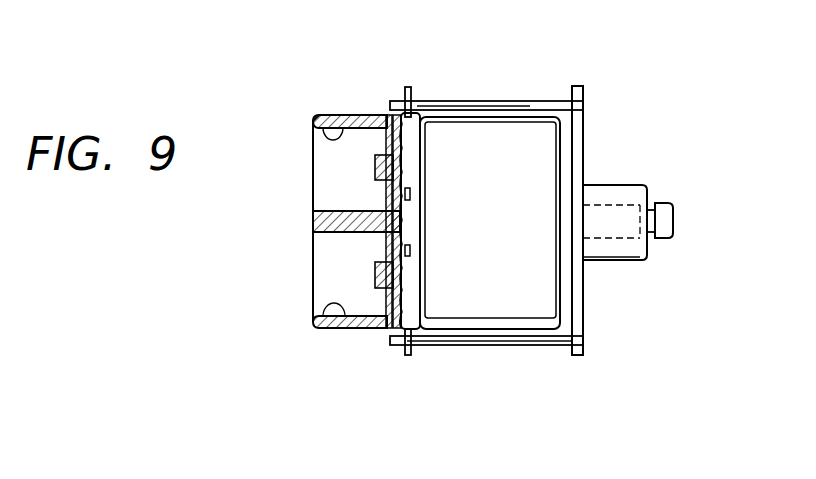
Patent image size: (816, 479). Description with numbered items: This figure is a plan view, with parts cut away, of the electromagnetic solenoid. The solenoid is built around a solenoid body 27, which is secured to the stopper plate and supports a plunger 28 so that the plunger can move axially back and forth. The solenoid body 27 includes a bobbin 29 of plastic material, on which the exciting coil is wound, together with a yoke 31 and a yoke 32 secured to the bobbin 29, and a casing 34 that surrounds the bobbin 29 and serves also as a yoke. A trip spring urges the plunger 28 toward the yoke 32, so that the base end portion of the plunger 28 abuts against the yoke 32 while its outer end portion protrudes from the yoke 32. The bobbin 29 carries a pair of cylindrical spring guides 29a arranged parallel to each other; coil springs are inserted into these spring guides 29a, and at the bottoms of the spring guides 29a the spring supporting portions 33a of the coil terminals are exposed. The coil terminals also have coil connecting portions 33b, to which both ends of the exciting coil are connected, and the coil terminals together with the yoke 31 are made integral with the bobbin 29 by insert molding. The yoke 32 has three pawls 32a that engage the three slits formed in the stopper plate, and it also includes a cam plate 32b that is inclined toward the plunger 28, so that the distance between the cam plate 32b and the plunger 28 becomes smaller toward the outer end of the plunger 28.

The solenoid body 27 is at (523, 140).
The plunger 28 is at (658, 240).
The bobbin 29 is at (417, 115).
The spring guides 29a is at (325, 115).
The yoke 31 is at (402, 87).
The yoke 32 is at (583, 98).
The pawls 32a is at (575, 87).
The cam plate 32b is at (642, 185).
The spring supporting portions 33a is at (383, 200).
The coil connecting portions 33b is at (410, 196).
The casing 34 is at (477, 345).